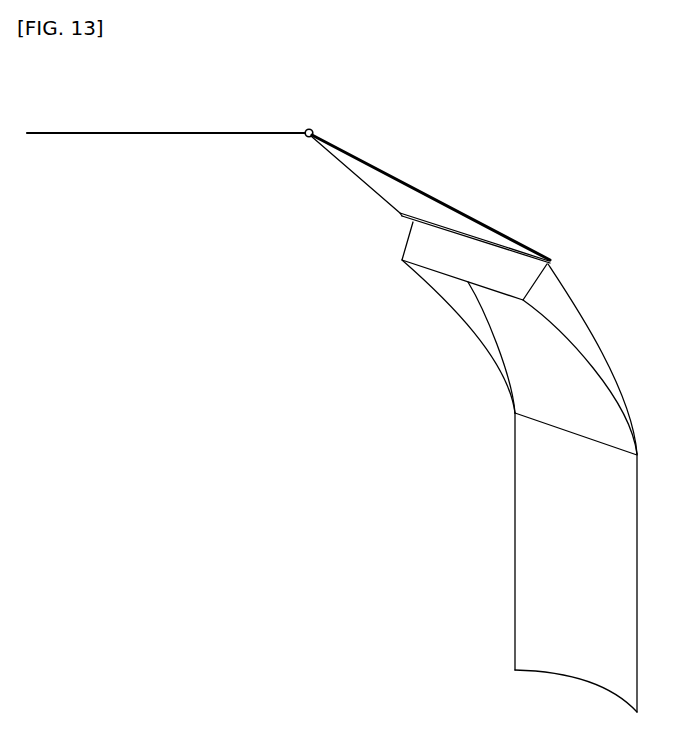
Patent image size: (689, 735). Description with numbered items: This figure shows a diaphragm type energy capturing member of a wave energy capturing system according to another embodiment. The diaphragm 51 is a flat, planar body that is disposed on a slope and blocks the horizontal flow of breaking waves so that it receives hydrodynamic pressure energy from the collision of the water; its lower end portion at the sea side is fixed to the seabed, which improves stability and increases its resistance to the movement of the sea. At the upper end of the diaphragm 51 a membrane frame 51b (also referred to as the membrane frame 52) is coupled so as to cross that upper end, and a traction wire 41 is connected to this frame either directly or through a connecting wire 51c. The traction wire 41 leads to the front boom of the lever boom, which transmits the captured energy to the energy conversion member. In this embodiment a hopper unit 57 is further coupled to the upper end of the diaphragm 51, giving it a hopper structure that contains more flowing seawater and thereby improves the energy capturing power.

The traction wire 41 is at (146, 131).
The membrane frame 52 is at (308, 128).
The diaphragm 51 is at (528, 573).
The membrane frame 51b is at (509, 249).
The connecting wire 51c is at (447, 202).
The hopper unit 57 is at (445, 275).